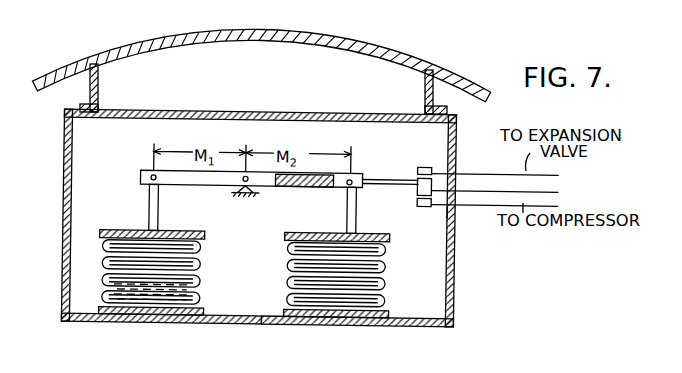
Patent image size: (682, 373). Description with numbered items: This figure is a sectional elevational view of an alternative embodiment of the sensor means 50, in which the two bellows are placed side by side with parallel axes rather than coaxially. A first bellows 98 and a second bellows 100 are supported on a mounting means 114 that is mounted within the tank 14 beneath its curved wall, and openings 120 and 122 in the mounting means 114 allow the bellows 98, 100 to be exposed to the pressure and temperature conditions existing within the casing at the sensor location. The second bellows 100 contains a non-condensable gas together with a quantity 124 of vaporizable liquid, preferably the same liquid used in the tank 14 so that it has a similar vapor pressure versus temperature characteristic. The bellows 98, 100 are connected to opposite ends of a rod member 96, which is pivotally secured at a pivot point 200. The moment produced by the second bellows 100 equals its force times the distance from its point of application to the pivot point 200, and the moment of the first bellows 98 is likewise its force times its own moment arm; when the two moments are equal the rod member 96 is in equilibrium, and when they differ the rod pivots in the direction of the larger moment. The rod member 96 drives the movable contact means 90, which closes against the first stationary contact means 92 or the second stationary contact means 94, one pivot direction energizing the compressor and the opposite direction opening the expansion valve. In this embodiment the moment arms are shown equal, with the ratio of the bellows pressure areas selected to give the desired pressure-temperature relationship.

The tank 14 is at (437, 72).
The sensor means 50 is at (336, 355).
The movable contact means 90 is at (417, 180).
The first stationary contact means 92 is at (417, 200).
The second stationary contact means 94 is at (423, 164).
The rod member 96 is at (192, 186).
The first bellows 98 is at (290, 250).
The second bellows 100 is at (201, 299).
The mounting means 114 is at (398, 324).
The opening 120 is at (223, 324).
The opening 122 is at (448, 210).
The quantity of vaporizable liquid 124 is at (201, 278).
The pivot point 200 is at (258, 193).